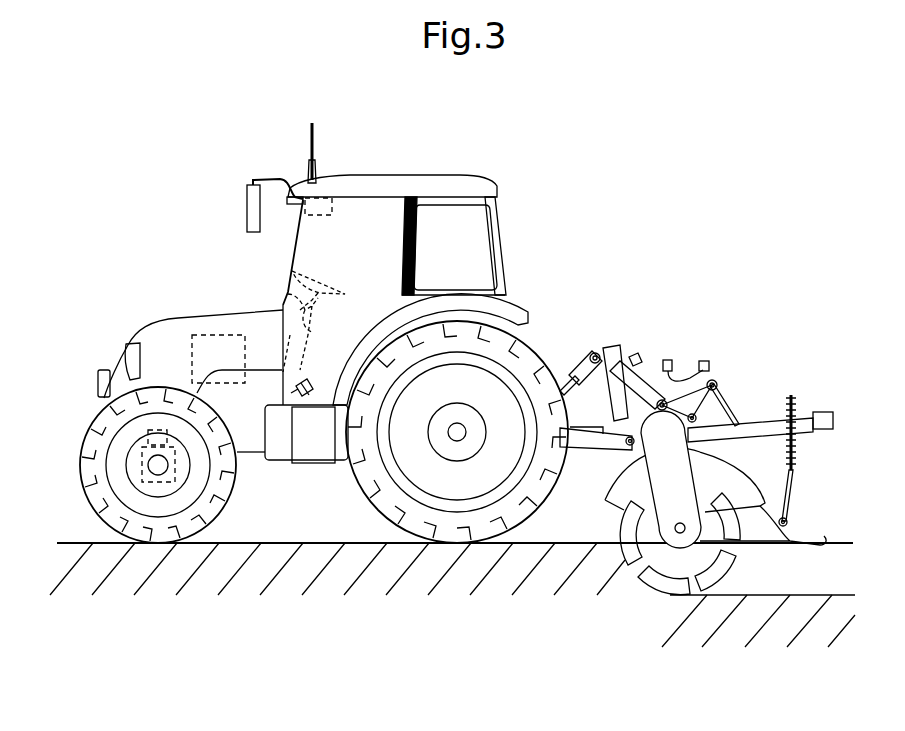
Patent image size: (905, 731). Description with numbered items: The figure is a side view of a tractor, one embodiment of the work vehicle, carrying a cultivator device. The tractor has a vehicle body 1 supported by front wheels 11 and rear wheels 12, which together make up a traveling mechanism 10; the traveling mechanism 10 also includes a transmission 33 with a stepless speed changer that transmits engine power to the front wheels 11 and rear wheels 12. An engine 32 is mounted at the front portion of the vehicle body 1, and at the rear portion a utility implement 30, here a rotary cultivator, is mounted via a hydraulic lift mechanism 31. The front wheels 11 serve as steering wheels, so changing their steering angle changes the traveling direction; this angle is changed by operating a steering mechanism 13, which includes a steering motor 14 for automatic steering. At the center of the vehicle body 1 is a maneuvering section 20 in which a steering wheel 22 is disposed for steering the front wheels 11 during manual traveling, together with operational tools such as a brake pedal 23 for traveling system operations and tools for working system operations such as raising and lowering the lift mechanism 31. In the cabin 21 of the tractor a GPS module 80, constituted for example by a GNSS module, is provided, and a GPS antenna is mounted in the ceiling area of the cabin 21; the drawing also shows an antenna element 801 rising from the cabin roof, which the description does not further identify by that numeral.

The vehicle body 1 is at (285, 484).
The traveling mechanism 10 is at (340, 490).
The front wheels 11 is at (150, 548).
The rear wheels 12 is at (468, 530).
The steering mechanism 13 is at (142, 465).
The steering motor 14 is at (148, 436).
The maneuvering section 20 is at (360, 270).
The cabin 21 is at (478, 186).
The steering wheel 22 is at (308, 283).
The brake pedal 23 is at (310, 383).
The utility implement 30 is at (688, 594).
The hydraulic lift mechanism 31 is at (634, 341).
The engine 32 is at (218, 335).
The transmission 33 is at (315, 462).
The GPS module 80 is at (334, 198).
The antenna 801 is at (311, 150).